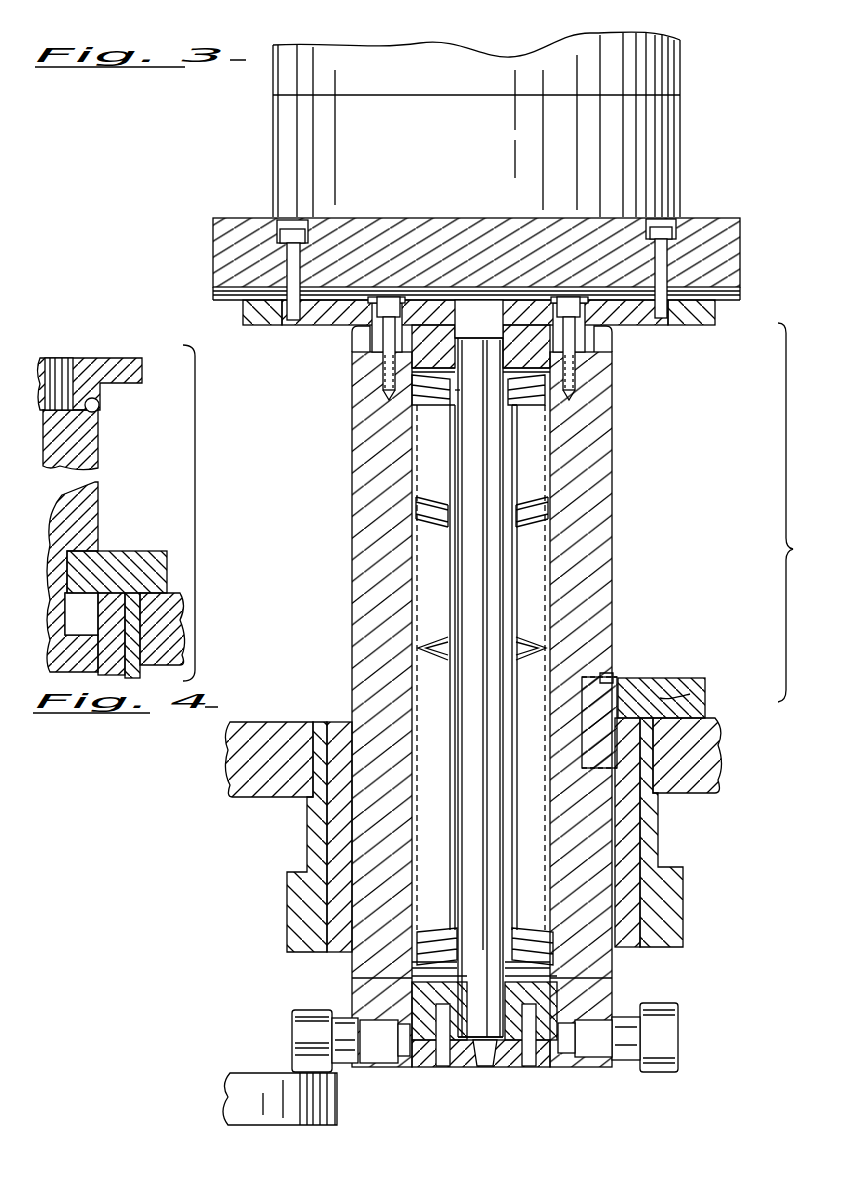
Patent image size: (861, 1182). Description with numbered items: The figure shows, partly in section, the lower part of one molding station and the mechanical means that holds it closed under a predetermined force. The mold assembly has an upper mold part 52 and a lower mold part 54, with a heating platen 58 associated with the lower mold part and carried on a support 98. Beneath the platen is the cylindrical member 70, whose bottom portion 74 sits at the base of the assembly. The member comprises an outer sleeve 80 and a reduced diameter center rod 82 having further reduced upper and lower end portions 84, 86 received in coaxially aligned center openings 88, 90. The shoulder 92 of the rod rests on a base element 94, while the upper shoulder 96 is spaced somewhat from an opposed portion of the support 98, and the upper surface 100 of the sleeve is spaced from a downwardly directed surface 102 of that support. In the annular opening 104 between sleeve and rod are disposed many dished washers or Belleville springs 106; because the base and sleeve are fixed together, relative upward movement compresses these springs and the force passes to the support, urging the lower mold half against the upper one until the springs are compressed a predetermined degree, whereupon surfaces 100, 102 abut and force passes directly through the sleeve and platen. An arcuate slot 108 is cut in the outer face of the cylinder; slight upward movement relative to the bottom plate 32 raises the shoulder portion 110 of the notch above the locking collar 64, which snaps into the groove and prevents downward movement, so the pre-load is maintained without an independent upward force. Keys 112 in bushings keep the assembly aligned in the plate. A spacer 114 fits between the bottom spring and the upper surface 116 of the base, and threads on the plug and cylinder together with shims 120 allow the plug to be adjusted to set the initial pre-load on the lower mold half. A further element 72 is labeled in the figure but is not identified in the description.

In FIG. 3, the bottom plate 32 is at (712, 756).
In FIG. 4, the bottom plate 32 is at (175, 636).
In FIG. 3, the upper mold part 52 is at (450, 81).
In FIG. 3, the lower mold part 54 is at (450, 145).
In FIG. 3, the heating platen 58 is at (722, 258).
In FIG. 3, the locking collar 64 is at (662, 678).
In FIG. 4, the locking collar 64 is at (135, 560).
In FIG. 3, the cylindrical member 70 is at (799, 512).
In FIG. 3, the housing assembly 72 is at (619, 457).
In FIG. 4, the housing assembly 72 is at (95, 451).
In FIG. 3, the bottom portion 74 is at (607, 1003).
In FIG. 3, the outer sleeve 80 is at (598, 560).
In FIG. 3, the center rod 82 is at (490, 643).
In FIG. 3, the upper end portion 84 is at (470, 393).
In FIG. 3, the lower end portion 86 is at (484, 1024).
In FIG. 3, the upper center opening 88 is at (454, 324).
In FIG. 3, the lower center opening 90 is at (497, 1041).
In FIG. 3, the shoulder 92 is at (463, 987).
In FIG. 3, the base element 94 is at (558, 990).
In FIG. 3, the upper shoulder 96 is at (452, 390).
In FIG. 3, the support 98 is at (442, 346).
In FIG. 3, the upper surface of the sleeve 100 is at (598, 351).
In FIG. 4, the upper surface of the sleeve 100 is at (99, 407).
In FIG. 3, the downwardly directed surface 102 is at (355, 363).
In FIG. 4, the downwardly directed surface 102 is at (100, 423).
In FIG. 3, the annular opening 104 is at (425, 550).
In FIG. 3, the Belleville springs 106 is at (422, 500).
In FIG. 3, the arcuate slot 108 is at (660, 698).
In FIG. 4, the arcuate slot 108 is at (80, 592).
In FIG. 3, the shoulder portion 110 is at (607, 675).
In FIG. 4, the shoulder portion 110 is at (92, 548).
In FIG. 3, the keys 112 is at (338, 835).
In FIG. 4, the keys 112 is at (138, 660).
In FIG. 3, the spacer 114 is at (412, 976).
In FIG. 3, the upper surface 116 is at (525, 930).
In FIG. 3, the shims 120 is at (410, 990).